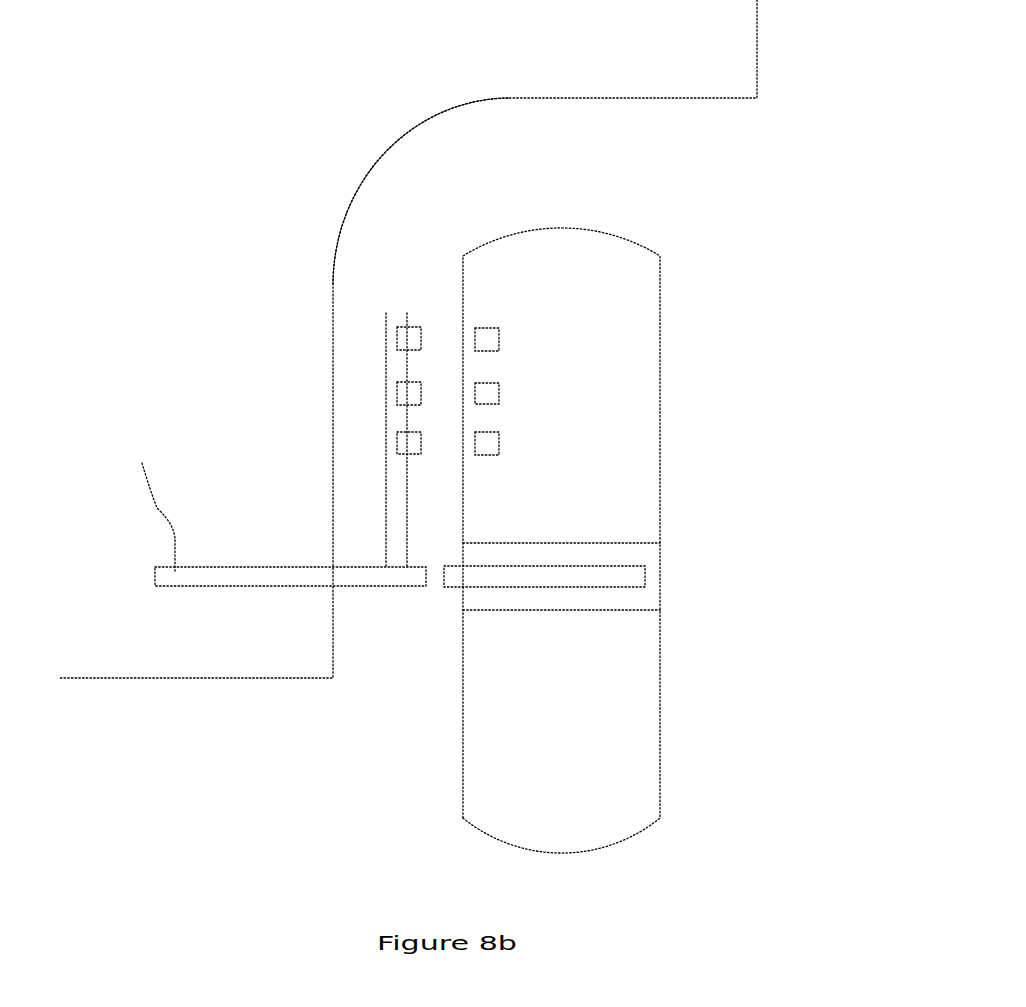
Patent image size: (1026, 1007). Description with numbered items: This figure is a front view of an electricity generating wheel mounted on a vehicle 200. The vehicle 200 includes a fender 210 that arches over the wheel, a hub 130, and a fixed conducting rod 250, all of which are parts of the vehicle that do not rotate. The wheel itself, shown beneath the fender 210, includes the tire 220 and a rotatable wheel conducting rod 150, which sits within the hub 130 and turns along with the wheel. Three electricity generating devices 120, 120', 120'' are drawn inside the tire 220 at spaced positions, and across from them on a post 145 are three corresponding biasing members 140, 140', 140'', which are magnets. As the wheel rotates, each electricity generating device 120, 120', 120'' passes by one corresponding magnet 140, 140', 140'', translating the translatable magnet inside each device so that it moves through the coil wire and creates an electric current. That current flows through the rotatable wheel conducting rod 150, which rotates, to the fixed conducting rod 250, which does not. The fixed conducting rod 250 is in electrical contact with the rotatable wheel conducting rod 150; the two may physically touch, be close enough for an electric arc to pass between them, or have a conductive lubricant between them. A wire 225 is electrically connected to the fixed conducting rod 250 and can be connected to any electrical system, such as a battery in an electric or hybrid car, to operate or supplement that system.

The vehicle 200 is at (298, 108).
The fender 210 is at (703, 42).
The tire 220 is at (638, 333).
The electricity generating device 120 is at (523, 325).
The electricity generating device 120' is at (526, 384).
The electricity generating device 120'' is at (531, 437).
The biasing member 140 is at (316, 322).
The biasing member 140' is at (304, 379).
The biasing member 140'' is at (298, 425).
The post 145 is at (396, 508).
The wire 225 is at (157, 503).
The fixed conducting rod 250 is at (220, 578).
The hub 130 is at (645, 556).
The rotatable wheel conducting rod 150 is at (545, 575).